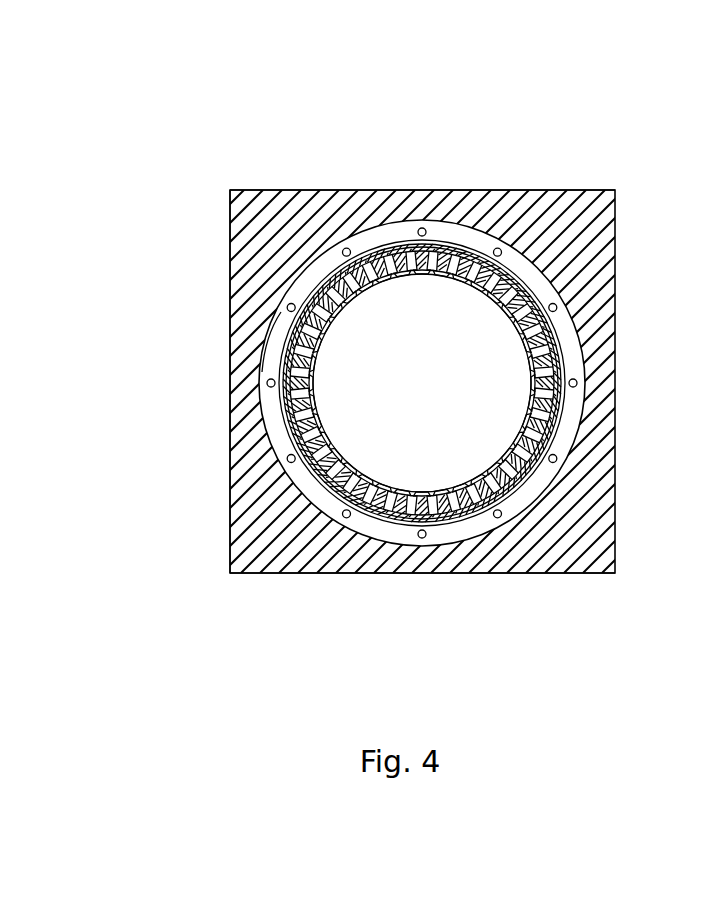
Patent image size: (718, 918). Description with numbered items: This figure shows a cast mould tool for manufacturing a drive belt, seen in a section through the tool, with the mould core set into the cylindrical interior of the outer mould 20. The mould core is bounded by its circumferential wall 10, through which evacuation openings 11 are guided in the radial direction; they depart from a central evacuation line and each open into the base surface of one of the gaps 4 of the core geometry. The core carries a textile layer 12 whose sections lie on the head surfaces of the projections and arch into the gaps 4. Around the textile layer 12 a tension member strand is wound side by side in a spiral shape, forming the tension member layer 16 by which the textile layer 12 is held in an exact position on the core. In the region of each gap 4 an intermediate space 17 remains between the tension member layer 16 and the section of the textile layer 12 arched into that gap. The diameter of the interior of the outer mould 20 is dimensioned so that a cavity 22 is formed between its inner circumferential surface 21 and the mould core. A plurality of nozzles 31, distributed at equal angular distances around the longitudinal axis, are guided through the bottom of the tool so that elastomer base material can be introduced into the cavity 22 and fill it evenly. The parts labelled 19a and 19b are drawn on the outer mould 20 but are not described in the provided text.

The gap 4 is at (485, 263).
The circumferential wall 10 is at (447, 252).
The evacuation opening 11 is at (397, 268).
The textile layer 12 is at (308, 315).
The tension member layer 16 is at (538, 464).
The intermediate space 17 is at (547, 440).
The upper block part 19a is at (248, 233).
The lower block part 19b is at (243, 490).
The outer mould 20 is at (272, 178).
The inner circumferential surface 21 is at (233, 363).
The cavity 22 is at (368, 243).
The nozzle 31 is at (562, 302).